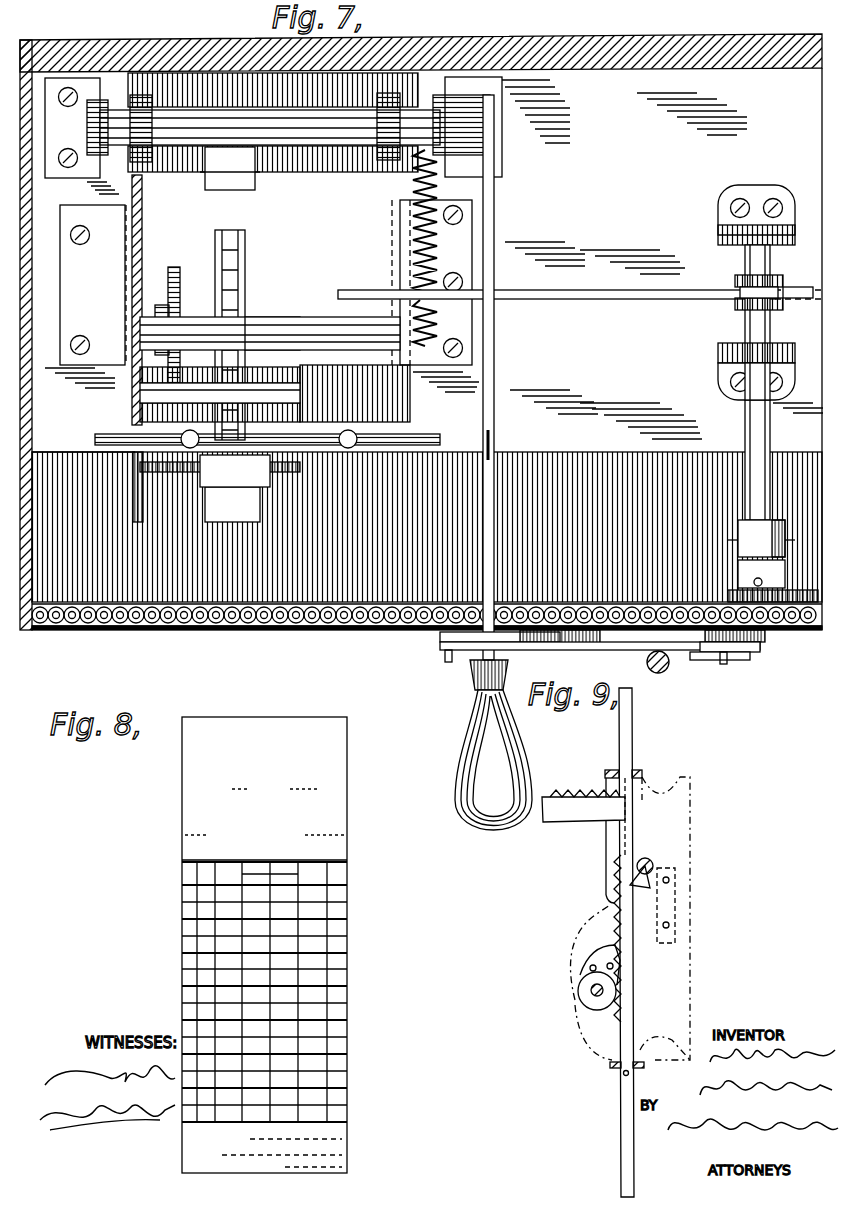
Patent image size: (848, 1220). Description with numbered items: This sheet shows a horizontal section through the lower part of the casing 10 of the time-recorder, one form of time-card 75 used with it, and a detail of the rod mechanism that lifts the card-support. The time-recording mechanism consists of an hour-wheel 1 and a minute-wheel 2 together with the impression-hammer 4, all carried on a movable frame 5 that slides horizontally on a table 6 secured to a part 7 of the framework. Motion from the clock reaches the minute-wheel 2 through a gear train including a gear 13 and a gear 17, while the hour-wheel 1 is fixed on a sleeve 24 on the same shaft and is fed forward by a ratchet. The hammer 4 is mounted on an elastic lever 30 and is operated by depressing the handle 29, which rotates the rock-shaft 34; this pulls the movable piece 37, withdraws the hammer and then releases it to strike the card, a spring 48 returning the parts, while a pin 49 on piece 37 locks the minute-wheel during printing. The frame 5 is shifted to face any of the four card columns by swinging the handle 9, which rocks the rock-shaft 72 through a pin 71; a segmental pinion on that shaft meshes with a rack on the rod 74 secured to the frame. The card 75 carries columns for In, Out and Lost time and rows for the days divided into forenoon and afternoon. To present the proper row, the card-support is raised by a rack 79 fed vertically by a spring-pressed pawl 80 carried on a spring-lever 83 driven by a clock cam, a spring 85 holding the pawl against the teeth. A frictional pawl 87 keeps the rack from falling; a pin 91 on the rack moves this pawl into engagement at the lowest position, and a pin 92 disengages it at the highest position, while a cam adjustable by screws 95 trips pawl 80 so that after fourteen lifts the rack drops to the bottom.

In FIG. 7, the hour-wheel 1 is at (240, 276).
In FIG. 7, the minute-wheel 2 is at (210, 250).
In FIG. 7, the impression-hammer 4 is at (240, 452).
In FIG. 7, the movable frame 5 is at (126, 250).
In FIG. 7, the table 6 is at (60, 262).
In FIG. 7, the framework 7 is at (83, 424).
In FIG. 7, the handle 9 is at (562, 648).
In FIG. 7, the casing 10 is at (345, 628).
In FIG. 7, the gear 13 is at (712, 285).
In FIG. 7, the gear 17 is at (176, 298).
In FIG. 7, the sleeve 24 is at (258, 320).
In FIG. 7, the handle 29 is at (494, 372).
In FIG. 7, the lever 30 is at (235, 471).
In FIG. 7, the rock-shaft 34 is at (320, 138).
In FIG. 7, the movable piece 37 is at (230, 168).
In FIG. 7, the spring 48 is at (437, 262).
In FIG. 7, the pin 49 is at (258, 175).
In FIG. 7, the pin 71 is at (790, 540).
In FIG. 7, the rock-shaft 72 is at (770, 505).
In FIG. 7, the rod 74 is at (610, 299).
In FIG. 8, the time-card 75 is at (347, 746).
In FIG. 9, the rack 79 is at (636, 1010).
In FIG. 9, the spring-pressed pawl 80 is at (612, 847).
In FIG. 9, the spring-lever 83 is at (583, 818).
In FIG. 9, the spring 85 is at (588, 790).
In FIG. 9, the frictional pawl 87 is at (582, 992).
In FIG. 9, the pin 91 is at (655, 878).
In FIG. 9, the pin 92 is at (630, 1074).
In FIG. 9, the screws 95 is at (678, 887).